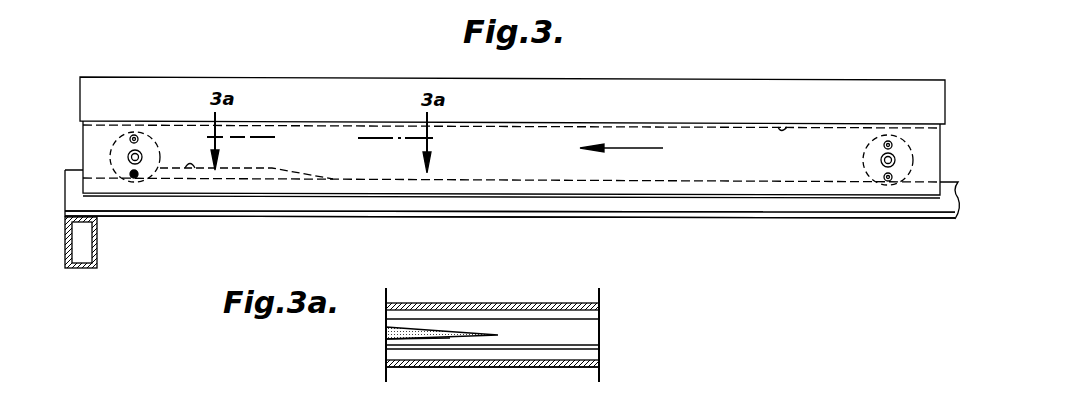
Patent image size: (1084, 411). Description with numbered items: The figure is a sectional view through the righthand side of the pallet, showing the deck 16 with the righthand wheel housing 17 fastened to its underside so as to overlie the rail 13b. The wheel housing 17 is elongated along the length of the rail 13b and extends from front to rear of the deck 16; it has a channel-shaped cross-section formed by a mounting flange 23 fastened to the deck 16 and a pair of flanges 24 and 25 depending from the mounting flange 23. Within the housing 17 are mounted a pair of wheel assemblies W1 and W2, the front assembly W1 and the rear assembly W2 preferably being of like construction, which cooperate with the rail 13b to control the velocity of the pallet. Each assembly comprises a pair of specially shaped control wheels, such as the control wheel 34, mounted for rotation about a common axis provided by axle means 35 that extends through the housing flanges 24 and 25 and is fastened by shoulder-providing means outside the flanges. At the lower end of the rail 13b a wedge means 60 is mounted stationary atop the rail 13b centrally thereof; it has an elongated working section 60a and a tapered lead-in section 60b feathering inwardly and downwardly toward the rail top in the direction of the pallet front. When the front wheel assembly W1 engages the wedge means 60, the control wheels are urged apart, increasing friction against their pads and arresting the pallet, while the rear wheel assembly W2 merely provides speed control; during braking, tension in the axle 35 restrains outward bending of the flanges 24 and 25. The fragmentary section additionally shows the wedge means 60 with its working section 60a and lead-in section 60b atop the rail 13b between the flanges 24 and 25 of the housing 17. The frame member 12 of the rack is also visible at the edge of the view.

In FIG. 3, the front wheel assembly W1 is at (118, 133).
In FIG. 3, the rear wheel assembly W2 is at (895, 135).
In FIG. 3, the frame member 12 is at (97, 258).
In FIG. 3, the rail 13b is at (757, 203).
In FIG. 3A, the rail 13b is at (600, 339).
In FIG. 3, the deck 16 is at (692, 90).
In FIG. 3, the wheel housing 17 is at (553, 173).
In FIG. 3A, the wheel housing 17 is at (532, 368).
In FIG. 3, the mounting flange 23 is at (790, 127).
In FIG. 3, the depending flange 24 is at (670, 173).
In FIG. 3A, the depending flange 24 is at (550, 368).
In FIG. 3A, the depending flange 25 is at (553, 305).
In FIG. 3, the control wheel 34 is at (151, 136).
In FIG. 3, the axle means 35 is at (142, 157).
In FIG. 3, the wedge means 60 is at (77, 172).
In FIG. 3A, the wedge means 60 is at (413, 330).
In FIG. 3, the working section 60a is at (186, 172).
In FIG. 3A, the working section 60a is at (402, 337).
In FIG. 3, the tapered lead-in section 60b is at (272, 168).
In FIG. 3A, the tapered lead-in section 60b is at (475, 332).